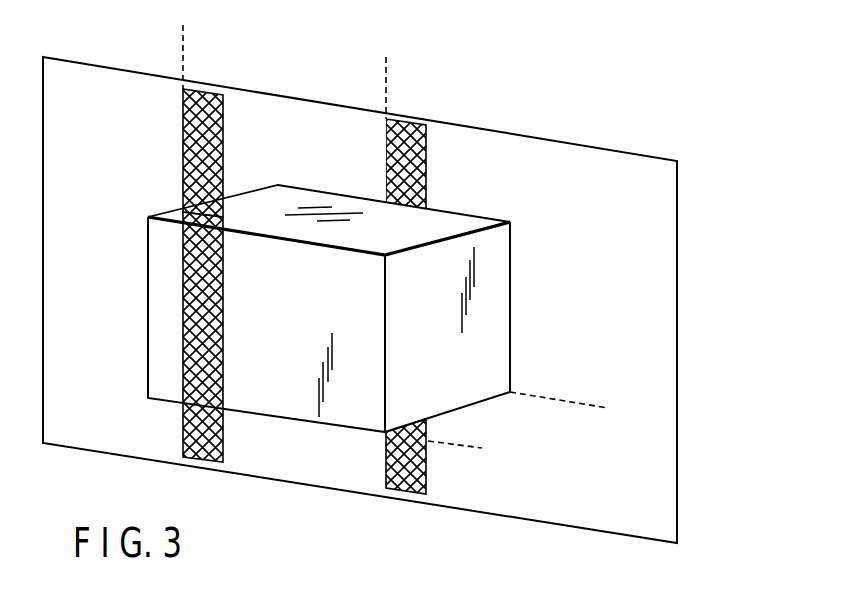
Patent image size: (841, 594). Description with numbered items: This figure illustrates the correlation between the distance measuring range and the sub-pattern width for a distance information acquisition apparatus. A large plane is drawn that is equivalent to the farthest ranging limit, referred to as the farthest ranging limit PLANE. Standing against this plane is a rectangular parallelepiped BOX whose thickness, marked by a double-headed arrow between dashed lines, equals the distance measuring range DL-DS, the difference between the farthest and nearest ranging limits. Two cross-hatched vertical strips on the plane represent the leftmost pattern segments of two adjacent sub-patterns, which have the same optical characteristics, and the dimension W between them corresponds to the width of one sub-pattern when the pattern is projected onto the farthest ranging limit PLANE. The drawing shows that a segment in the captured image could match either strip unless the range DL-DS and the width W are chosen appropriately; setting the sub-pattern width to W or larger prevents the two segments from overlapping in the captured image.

The farthest ranging limit plane PLANE is at (487, 127).
The rectangular parallelepiped box BOX is at (512, 268).
The sub-pattern width W is at (383, 81).
The distance measuring range DL-DS is at (563, 403).